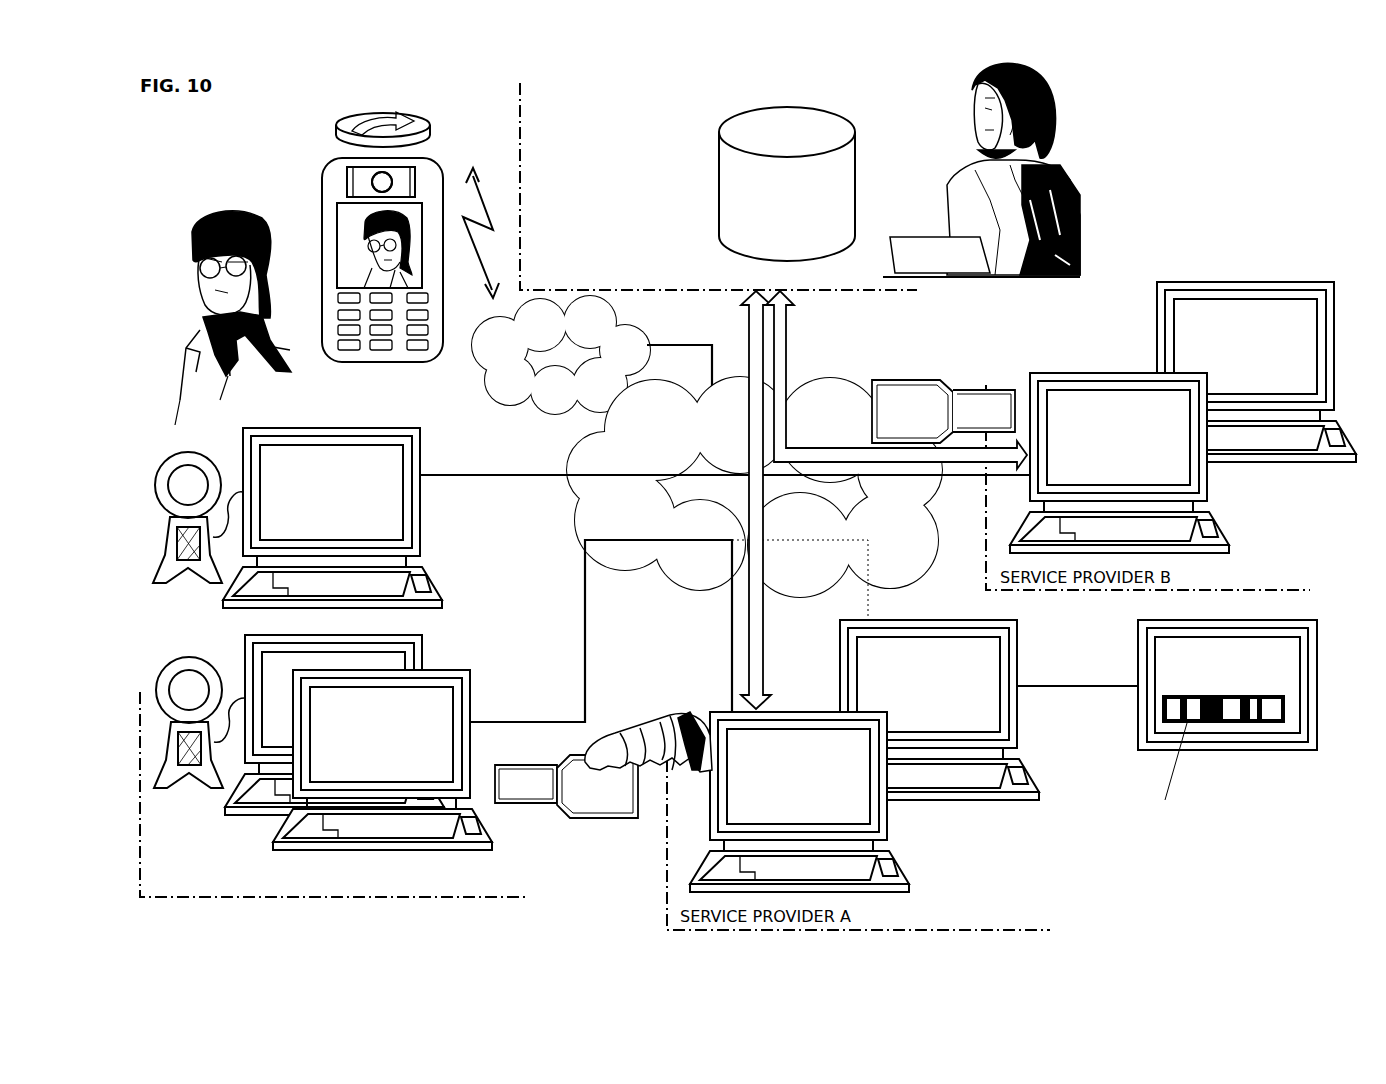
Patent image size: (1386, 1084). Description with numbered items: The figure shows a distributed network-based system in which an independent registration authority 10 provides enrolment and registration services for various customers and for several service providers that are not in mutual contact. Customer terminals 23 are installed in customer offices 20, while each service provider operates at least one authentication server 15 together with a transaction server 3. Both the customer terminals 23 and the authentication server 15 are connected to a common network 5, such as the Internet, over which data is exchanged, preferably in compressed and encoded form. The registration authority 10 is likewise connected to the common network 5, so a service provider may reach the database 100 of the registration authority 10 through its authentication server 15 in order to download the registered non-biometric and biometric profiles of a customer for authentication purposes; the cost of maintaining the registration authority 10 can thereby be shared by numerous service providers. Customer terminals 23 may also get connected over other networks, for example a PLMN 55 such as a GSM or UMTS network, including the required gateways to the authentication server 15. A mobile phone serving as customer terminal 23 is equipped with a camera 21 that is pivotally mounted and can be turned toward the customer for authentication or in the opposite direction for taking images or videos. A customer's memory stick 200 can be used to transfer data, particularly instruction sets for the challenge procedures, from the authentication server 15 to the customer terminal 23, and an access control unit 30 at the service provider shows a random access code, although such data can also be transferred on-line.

The registration authority 10 is at (800, 176).
The database 100 is at (787, 184).
The customer terminal 23 is at (322, 466).
The camera 21 is at (403, 187).
The PLMN 55 is at (592, 355).
The common network 5 is at (754, 487).
The customer offices 20 is at (333, 794).
The transaction server 3 is at (1088, 541).
The authentication server 15 is at (959, 632).
The access control 30 is at (1227, 738).
The memory stick 200 is at (755, 599).